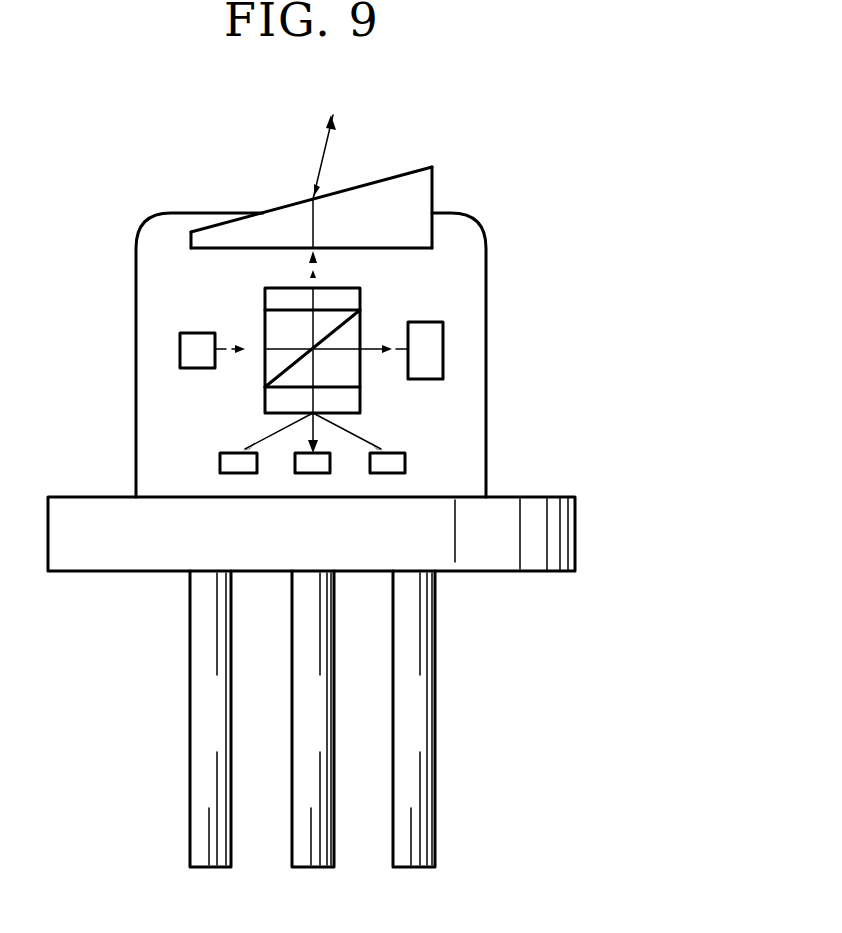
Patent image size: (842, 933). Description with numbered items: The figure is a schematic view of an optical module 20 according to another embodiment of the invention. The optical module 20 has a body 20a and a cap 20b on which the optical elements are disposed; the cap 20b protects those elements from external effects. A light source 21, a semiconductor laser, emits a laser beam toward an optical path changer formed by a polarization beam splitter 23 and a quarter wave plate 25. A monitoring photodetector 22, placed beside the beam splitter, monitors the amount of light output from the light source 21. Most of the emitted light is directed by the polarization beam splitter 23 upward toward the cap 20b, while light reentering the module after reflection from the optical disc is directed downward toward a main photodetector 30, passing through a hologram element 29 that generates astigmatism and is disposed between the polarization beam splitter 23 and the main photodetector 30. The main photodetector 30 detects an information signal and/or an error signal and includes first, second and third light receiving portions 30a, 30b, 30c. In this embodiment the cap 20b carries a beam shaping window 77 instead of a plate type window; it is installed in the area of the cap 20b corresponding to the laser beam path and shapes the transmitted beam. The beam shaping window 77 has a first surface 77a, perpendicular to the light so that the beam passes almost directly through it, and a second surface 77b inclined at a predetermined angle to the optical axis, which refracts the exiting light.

The optical module 20 is at (110, 217).
The body 20a is at (576, 536).
The cap 20b is at (487, 396).
The light source 21 is at (198, 372).
The monitoring photodetector 22 is at (444, 349).
The polarization beam splitter 23 is at (319, 350).
The quarter wave plate 25 is at (264, 292).
The hologram element 29 is at (361, 401).
The main photodetector 30 is at (381, 488).
The first light receiving portion 30a is at (313, 474).
The second light receiving portion 30b is at (237, 474).
The third light receiving portion 30c is at (388, 474).
The beam shaping window 77 is at (370, 195).
The first surface 77a is at (394, 251).
The second surface 77b is at (388, 179).